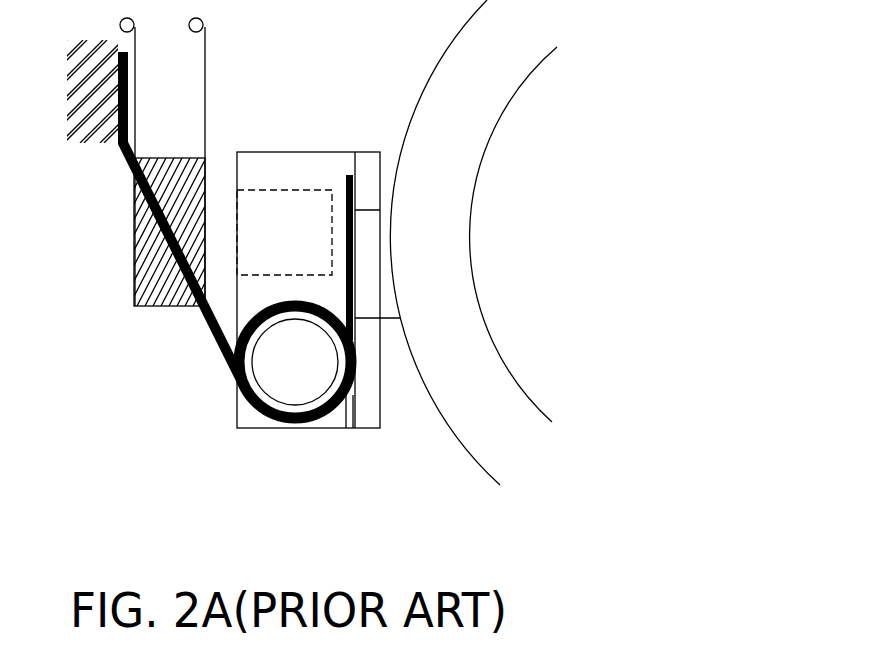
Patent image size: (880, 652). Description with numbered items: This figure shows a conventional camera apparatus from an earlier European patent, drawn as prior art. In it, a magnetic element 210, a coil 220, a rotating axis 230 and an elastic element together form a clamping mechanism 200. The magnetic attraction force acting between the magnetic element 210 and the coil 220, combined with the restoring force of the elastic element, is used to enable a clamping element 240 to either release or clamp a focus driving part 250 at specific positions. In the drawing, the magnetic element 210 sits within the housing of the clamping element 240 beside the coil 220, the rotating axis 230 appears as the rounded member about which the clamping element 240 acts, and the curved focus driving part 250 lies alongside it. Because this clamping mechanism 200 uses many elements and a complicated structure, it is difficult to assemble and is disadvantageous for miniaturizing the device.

The clamping mechanism 200 is at (594, 569).
The magnetic element 210 is at (297, 218).
The coil 220 is at (134, 262).
The rotating axis 230 is at (270, 360).
The clamping element 240 is at (307, 430).
The focus driving part 250 is at (463, 413).